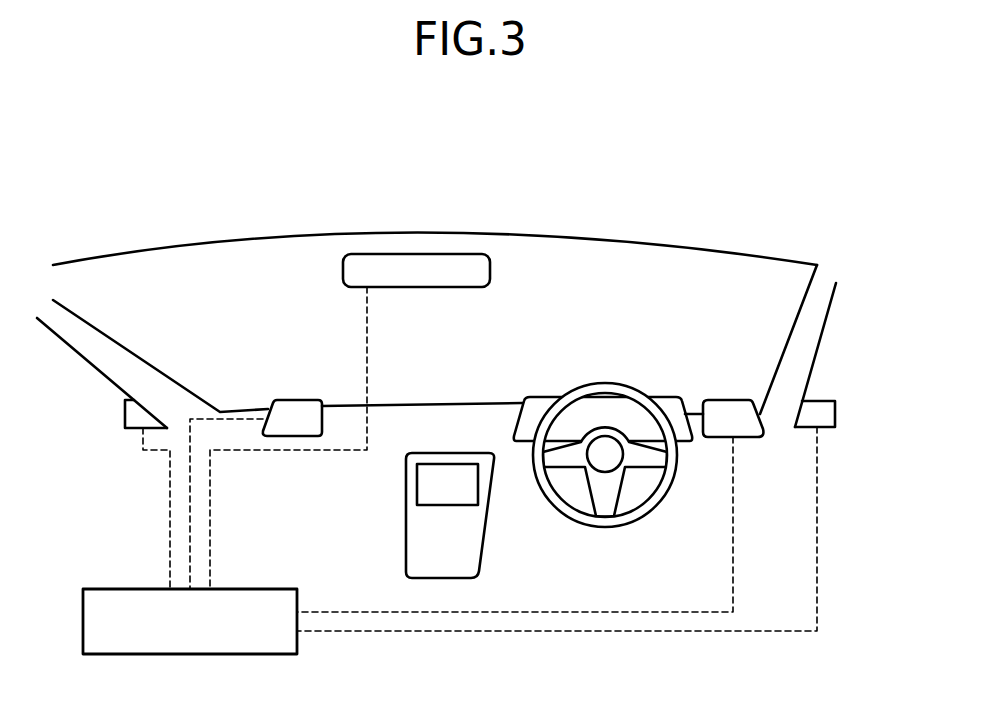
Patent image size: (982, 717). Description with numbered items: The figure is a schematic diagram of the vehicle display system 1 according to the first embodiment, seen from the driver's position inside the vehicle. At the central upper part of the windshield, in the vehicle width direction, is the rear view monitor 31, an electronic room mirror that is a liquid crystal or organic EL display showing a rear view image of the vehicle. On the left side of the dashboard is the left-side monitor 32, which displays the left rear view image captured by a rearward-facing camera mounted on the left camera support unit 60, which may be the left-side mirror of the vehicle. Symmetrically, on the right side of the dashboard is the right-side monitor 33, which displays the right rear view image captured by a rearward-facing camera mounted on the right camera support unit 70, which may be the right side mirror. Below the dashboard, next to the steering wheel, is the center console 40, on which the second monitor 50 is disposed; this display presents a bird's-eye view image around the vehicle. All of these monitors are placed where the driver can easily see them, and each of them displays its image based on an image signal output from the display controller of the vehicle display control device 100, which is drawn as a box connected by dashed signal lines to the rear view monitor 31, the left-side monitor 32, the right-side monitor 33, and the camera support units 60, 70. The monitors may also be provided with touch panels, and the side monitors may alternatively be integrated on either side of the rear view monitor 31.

The vehicle display system 1 is at (796, 169).
The rear view monitor 31 is at (415, 272).
The left-side monitor 32 is at (295, 418).
The right-side monitor 33 is at (733, 420).
The center console 40 is at (422, 540).
The second monitor 50 is at (430, 483).
The left camera support unit 60 is at (125, 412).
The right camera support unit 70 is at (835, 411).
The vehicle display control device 100 is at (106, 589).